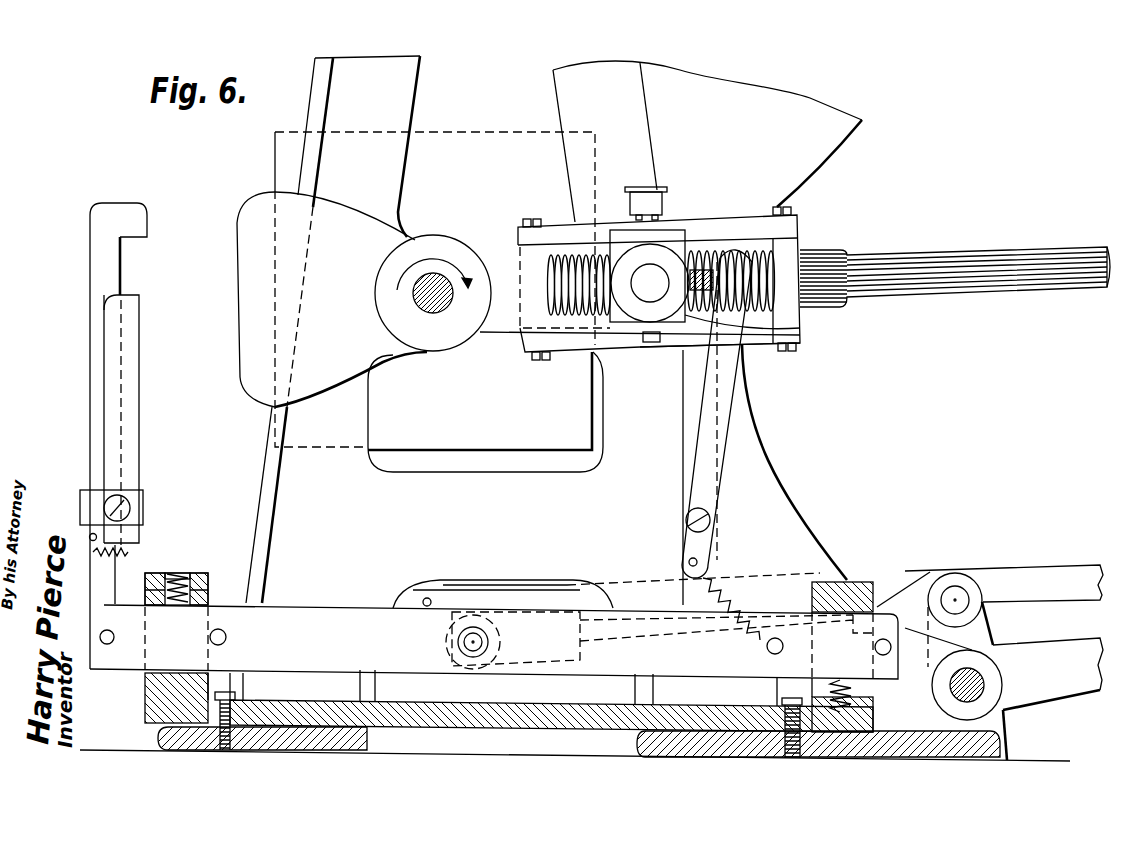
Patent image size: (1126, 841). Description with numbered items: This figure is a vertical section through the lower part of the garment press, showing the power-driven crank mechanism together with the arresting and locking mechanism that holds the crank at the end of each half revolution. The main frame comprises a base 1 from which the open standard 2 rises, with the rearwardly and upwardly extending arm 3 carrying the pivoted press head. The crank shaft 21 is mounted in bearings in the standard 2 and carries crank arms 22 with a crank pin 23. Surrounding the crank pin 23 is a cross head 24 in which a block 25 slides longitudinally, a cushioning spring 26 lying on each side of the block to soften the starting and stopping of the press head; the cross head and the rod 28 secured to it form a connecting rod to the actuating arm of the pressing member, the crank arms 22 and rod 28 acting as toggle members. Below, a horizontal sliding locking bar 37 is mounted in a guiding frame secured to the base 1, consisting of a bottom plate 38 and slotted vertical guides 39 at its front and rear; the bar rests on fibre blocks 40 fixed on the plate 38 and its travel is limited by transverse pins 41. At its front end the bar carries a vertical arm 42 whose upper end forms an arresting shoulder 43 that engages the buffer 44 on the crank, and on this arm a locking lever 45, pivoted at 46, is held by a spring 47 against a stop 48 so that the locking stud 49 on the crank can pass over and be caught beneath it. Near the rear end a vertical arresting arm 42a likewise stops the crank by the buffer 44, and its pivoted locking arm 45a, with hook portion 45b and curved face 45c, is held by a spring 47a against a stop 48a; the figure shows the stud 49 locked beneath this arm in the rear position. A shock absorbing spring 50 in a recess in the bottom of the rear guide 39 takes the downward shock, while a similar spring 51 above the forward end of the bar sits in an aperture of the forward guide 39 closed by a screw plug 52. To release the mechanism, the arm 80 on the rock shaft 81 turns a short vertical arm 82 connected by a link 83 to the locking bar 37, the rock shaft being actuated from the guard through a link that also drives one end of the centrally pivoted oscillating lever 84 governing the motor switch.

The base 1 is at (870, 750).
The standard 2 is at (320, 102).
The arm 3 is at (768, 95).
The crank shaft 21 is at (440, 312).
The crank arms 22 is at (333, 235).
The crank pin 23 is at (650, 292).
The cross head 24 is at (780, 227).
The block 25 is at (670, 237).
The cushioning spring 26 is at (745, 263).
The rod 28 is at (1002, 262).
The locking bar 37 is at (313, 617).
The bottom plate 38 is at (586, 688).
The guides 39 is at (202, 576).
The fibre blocks 40 is at (335, 683).
The pins 41 is at (110, 635).
The vertical arm 42 is at (97, 287).
The arresting arm 42a is at (693, 400).
The arresting shoulder 43 is at (130, 230).
The buffer 44 is at (700, 318).
The locking lever 45 is at (128, 380).
The locking arm 45a is at (725, 388).
The hook portion 45b is at (803, 333).
The curved face 45c is at (730, 250).
The pivot 46 is at (128, 507).
The spring 47 is at (107, 555).
The spring 47a is at (740, 597).
The stop 48 is at (90, 538).
The stop 48a is at (713, 567).
The locking stud 49 is at (717, 248).
The shock absorbing spring 50 is at (875, 707).
The shock absorbing spring 51 is at (170, 580).
The screw plug 52 is at (178, 573).
The arm 80 is at (1063, 690).
The rock shaft 81 is at (977, 690).
The vertical arm 82 is at (972, 638).
The link 83 is at (905, 593).
The oscillating lever 84 is at (1038, 580).